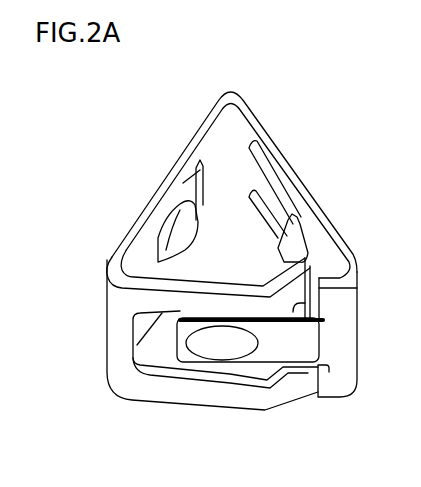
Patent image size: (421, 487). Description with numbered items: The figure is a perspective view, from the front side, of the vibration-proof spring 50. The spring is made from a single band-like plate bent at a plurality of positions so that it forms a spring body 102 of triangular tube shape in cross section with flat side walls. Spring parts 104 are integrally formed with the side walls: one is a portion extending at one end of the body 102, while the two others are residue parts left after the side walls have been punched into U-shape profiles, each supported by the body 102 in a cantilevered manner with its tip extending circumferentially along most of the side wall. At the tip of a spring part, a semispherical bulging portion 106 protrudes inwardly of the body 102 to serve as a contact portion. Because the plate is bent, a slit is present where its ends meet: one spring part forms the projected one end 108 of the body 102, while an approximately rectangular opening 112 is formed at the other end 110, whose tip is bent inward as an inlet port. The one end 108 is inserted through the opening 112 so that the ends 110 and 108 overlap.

The vibration-proof spring 50 is at (294, 112).
The spring body 102 is at (192, 137).
The spring part 104 is at (113, 263).
The bulging portion 106 is at (178, 230).
The one end 108 is at (200, 365).
The other end 110 is at (155, 390).
The opening 112 is at (133, 323).